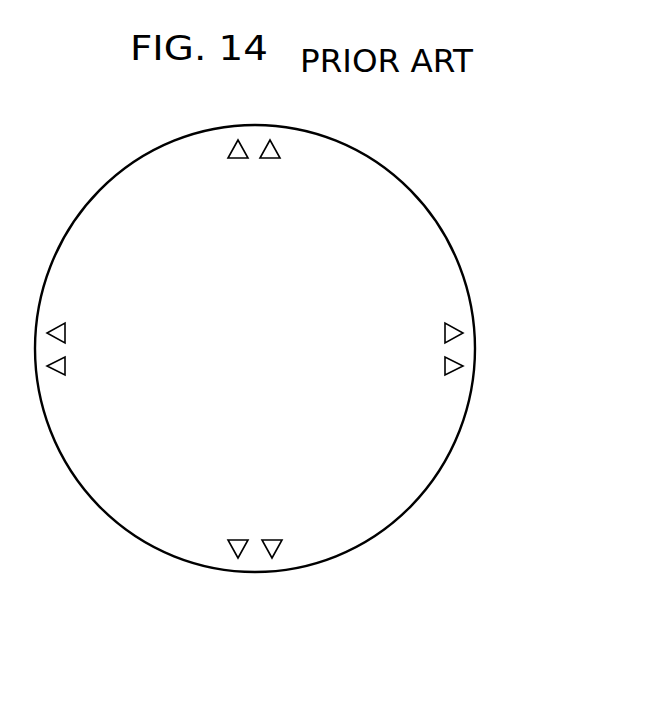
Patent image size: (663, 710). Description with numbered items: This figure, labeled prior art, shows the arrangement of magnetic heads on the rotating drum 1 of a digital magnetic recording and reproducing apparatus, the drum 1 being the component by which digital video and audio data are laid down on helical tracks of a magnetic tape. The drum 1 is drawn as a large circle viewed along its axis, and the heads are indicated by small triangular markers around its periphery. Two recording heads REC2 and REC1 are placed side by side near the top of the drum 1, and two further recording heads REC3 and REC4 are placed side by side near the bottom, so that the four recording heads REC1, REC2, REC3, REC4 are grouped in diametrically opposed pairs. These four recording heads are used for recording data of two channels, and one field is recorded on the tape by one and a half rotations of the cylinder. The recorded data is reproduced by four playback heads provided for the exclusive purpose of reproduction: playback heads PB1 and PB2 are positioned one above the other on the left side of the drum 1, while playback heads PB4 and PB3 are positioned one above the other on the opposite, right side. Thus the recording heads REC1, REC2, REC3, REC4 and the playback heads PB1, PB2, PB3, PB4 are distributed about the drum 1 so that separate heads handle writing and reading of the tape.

The drum 1 is at (403, 209).
The recording head REC1 is at (286, 165).
The recording head REC2 is at (221, 165).
The recording head REC3 is at (221, 534).
The recording head REC4 is at (290, 534).
The playback head PB1 is at (83, 334).
The playback head PB2 is at (87, 367).
The playback head PB3 is at (425, 367).
The playback head PB4 is at (425, 334).